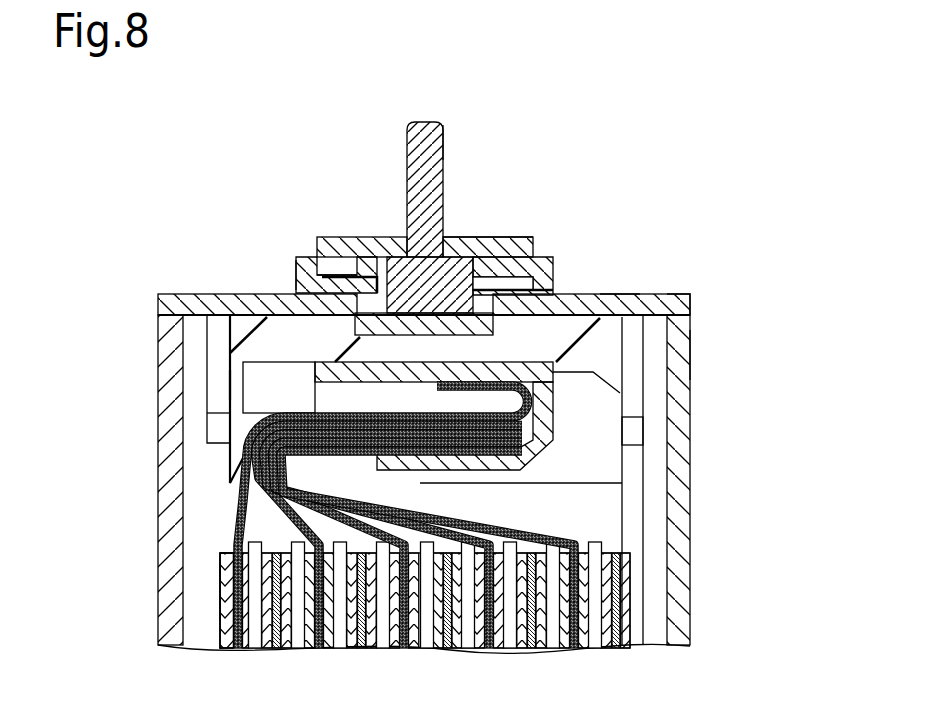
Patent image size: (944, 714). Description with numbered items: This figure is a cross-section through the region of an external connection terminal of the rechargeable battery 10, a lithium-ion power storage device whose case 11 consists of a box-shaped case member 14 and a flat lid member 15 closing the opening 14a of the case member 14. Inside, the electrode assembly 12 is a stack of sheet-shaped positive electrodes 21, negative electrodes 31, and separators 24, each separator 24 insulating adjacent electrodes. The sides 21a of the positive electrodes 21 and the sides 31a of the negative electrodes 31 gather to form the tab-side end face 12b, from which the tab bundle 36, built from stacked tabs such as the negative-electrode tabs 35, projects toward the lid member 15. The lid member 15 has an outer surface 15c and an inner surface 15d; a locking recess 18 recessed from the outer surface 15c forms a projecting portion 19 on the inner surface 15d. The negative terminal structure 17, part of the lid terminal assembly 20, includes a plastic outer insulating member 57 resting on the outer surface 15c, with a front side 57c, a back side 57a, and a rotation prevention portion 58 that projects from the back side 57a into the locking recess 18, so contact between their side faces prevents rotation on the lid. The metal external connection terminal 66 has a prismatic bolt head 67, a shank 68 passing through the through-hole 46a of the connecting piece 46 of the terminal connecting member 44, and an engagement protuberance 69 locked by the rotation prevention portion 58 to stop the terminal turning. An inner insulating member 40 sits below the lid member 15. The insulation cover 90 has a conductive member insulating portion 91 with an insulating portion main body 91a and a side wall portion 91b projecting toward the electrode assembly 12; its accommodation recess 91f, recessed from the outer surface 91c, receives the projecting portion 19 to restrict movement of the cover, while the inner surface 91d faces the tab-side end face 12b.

The rechargeable battery 10 is at (738, 156).
The case 11 is at (762, 272).
The electrode assembly 12 is at (632, 586).
The tab-side end face 12b is at (612, 553).
The case member 14 is at (690, 328).
The opening 14a is at (690, 352).
The lid member 15 is at (690, 303).
The outer surface 15c is at (620, 294).
The inner surface 15d is at (667, 294).
The negative terminal structure 17 is at (547, 236).
The locking recess 18 is at (332, 312).
The projecting portion 19 is at (500, 295).
The lid terminal assembly 20 is at (583, 292).
The positive electrode 21 is at (268, 645).
The side of the positive electrode 21a is at (220, 588).
The separator 24 is at (297, 645).
The negative electrode 31 is at (212, 648).
The side of the negative electrode 31a is at (223, 545).
The negative-electrode tab 35 is at (234, 518).
The tab bundle 36 is at (228, 500).
The inner insulating member 40 is at (213, 350).
The terminal connecting member 44 is at (530, 237).
The connecting piece 46 is at (468, 237).
The through-hole 46a is at (420, 225).
The outer insulating member 57 is at (302, 257).
The back side 57a is at (296, 262).
The front side 57c is at (332, 257).
The rotation prevention portion 58 is at (417, 307).
The external connection terminal 66 is at (425, 122).
The bolt head 67 is at (370, 250).
The shank 68 is at (443, 146).
The engagement protuberance 69 is at (418, 322).
The insulation cover 90 is at (228, 330).
The conductive member insulating portion 91 is at (690, 398).
The insulating portion main body 91a is at (585, 355).
The side wall portion 91b is at (228, 383).
The outer surface 91c is at (258, 294).
The inner surface 91d is at (265, 364).
The accommodation recess 91f is at (348, 364).